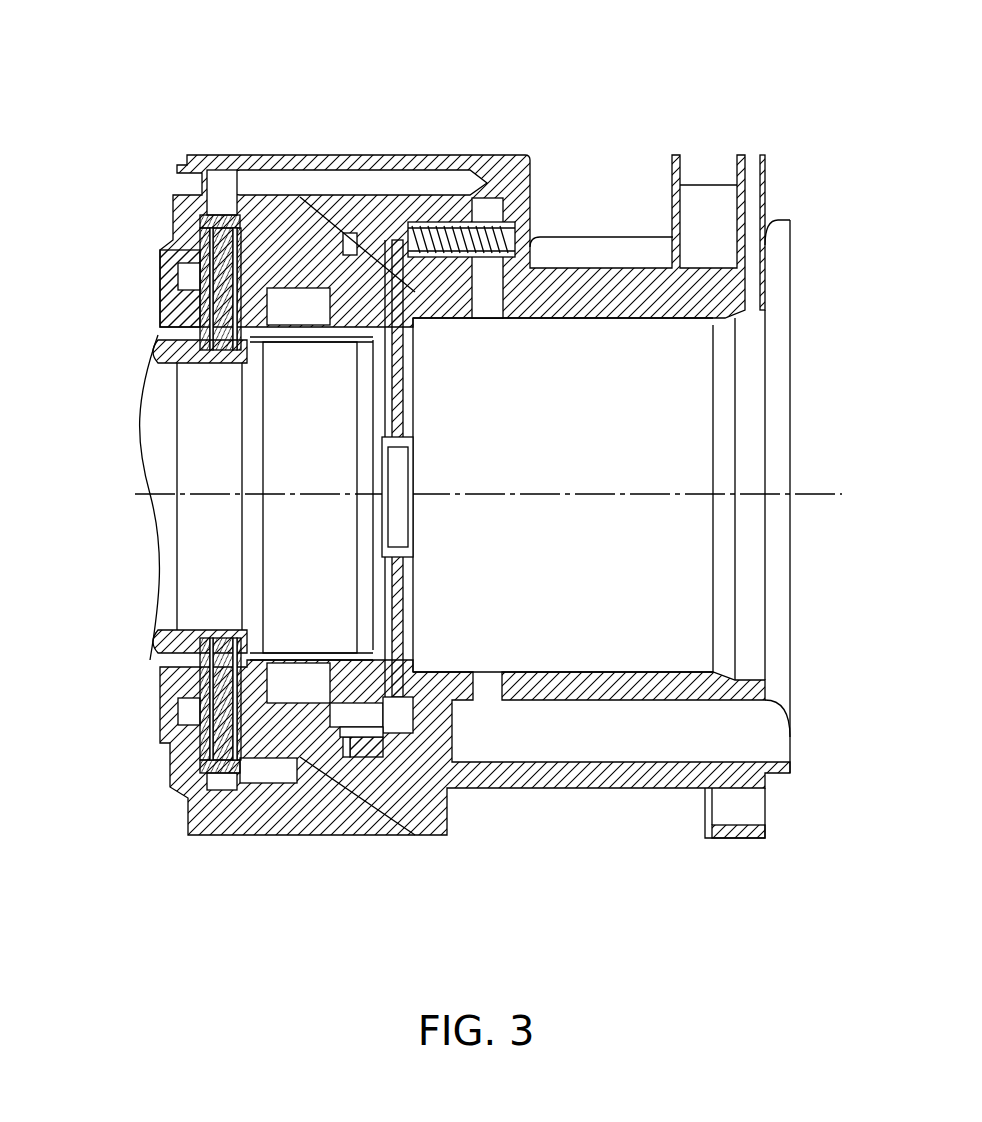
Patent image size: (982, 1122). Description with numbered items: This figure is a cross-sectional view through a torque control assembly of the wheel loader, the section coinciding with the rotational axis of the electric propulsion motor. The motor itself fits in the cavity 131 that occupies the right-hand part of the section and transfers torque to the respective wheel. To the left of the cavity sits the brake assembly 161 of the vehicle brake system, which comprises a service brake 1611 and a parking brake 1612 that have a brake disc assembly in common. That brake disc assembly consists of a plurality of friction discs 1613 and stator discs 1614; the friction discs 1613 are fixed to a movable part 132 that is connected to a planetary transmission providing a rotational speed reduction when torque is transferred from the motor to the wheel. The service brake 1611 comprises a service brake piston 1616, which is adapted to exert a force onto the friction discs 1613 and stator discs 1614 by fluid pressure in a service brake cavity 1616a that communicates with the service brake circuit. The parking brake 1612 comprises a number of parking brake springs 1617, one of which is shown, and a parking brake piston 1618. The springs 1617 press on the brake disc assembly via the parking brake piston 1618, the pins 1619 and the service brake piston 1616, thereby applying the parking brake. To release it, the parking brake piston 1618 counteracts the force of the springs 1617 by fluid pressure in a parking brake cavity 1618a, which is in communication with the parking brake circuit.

The cavity 131 is at (626, 425).
The movable part 132 is at (213, 365).
The brake assembly 161 is at (340, 138).
The service brake 1611 is at (262, 212).
The parking brake 1612 is at (392, 228).
The friction discs 1613 is at (200, 250).
The stator discs 1614 is at (197, 288).
The service brake piston 1616 is at (282, 757).
The service brake cavity 1616a is at (320, 735).
The parking brake springs 1617 is at (494, 218).
The parking brake piston 1618 is at (395, 750).
The parking brake cavity 1618a is at (360, 745).
The pins 1619 is at (413, 712).